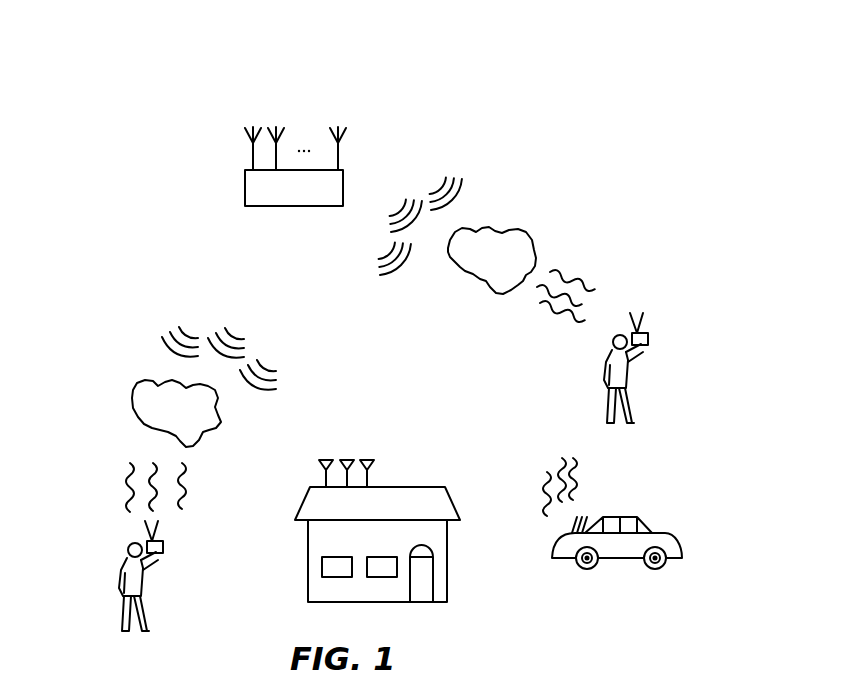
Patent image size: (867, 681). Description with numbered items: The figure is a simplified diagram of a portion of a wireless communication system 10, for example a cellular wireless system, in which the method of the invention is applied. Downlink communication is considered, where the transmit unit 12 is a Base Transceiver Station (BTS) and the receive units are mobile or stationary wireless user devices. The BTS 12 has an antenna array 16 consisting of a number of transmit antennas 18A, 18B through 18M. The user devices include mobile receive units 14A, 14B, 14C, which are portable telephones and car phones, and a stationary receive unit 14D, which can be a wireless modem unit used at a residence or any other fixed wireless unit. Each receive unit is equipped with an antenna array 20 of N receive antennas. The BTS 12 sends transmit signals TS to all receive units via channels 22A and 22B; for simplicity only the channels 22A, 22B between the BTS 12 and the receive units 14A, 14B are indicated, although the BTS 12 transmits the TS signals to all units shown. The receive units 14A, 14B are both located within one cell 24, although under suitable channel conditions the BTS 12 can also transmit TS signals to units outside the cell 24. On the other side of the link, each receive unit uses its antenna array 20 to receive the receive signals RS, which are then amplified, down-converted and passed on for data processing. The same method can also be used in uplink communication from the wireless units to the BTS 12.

The wireless communication system 10 is at (630, 144).
The transmit unit 12 is at (245, 185).
The mobile receive unit 14A is at (648, 338).
The mobile receive unit 14B is at (162, 548).
The mobile receive unit 14C is at (670, 535).
The stationary receive unit 14D is at (395, 487).
The antenna array 16 is at (178, 132).
The transmit antenna 18A is at (251, 153).
The transmit antenna 18B is at (276, 146).
The transmit antenna 18M is at (340, 145).
The antenna array 20 is at (661, 304).
The channel 22A is at (480, 278).
The channel 22B is at (152, 382).
The cell 24 is at (370, 363).
The transmit signals TS is at (485, 167).
The receive signals RS is at (596, 259).